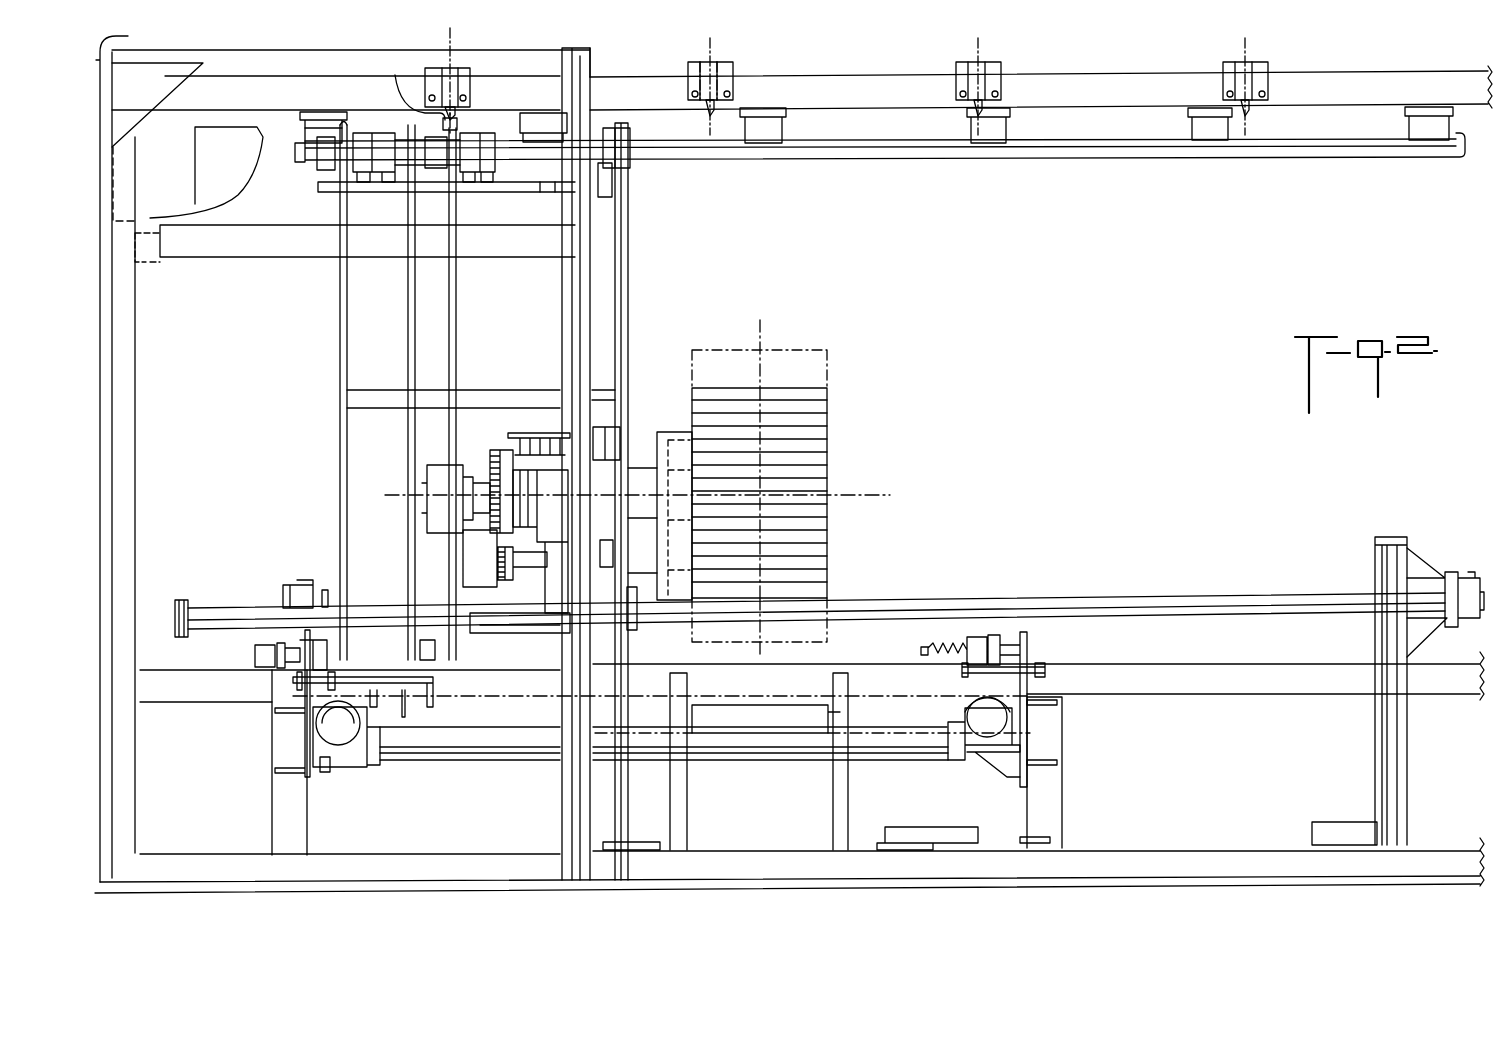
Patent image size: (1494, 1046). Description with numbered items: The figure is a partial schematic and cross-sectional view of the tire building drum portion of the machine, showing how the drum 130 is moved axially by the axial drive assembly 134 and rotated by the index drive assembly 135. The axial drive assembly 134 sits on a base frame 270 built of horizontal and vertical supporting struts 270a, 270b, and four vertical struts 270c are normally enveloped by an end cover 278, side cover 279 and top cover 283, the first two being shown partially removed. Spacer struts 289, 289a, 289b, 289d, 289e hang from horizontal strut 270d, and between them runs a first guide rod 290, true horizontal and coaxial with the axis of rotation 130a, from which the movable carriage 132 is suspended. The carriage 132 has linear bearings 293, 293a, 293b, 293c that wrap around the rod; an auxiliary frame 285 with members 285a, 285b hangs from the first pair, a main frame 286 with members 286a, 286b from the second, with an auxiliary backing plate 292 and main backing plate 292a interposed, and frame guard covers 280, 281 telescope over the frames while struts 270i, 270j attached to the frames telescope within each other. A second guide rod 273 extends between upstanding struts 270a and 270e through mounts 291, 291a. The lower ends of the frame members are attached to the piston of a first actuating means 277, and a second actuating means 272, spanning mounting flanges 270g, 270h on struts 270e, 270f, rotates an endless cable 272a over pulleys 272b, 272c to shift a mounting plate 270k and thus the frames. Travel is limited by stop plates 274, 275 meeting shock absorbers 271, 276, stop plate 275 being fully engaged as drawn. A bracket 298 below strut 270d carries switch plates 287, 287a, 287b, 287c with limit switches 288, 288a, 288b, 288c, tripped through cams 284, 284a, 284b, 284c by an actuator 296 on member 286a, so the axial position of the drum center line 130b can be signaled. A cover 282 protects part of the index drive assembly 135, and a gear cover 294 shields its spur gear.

The drum 130 is at (848, 438).
The axis of rotation 130a is at (870, 495).
The center line 130b is at (760, 342).
The horizontally movable carriage 132 is at (632, 337).
The axial drive assembly 134 is at (777, 774).
The index drive assembly 135 is at (486, 445).
The base frame 270 is at (1208, 857).
The supporting strut 270a is at (1378, 740).
The supporting strut 270b is at (168, 693).
The vertical supporting struts 270c is at (134, 773).
The horizontal supporting strut 270d is at (250, 62).
The upstanding strut 270e is at (280, 802).
The upstanding strut 270f is at (1052, 802).
The mounting flange 270g is at (1058, 737).
The mounting flange 270h is at (305, 740).
The supporting strut 270i is at (198, 250).
The supporting strut 270j is at (144, 262).
The mounting plate 270k is at (406, 690).
The shock absorber 271 is at (973, 643).
The second actuating means 272 is at (880, 755).
The endless cable 272a is at (618, 700).
The pulley 272b is at (975, 717).
The pulley 272c is at (343, 745).
The second guide rod 273 is at (1207, 600).
The stop plate 274 is at (428, 655).
The stop plate 275 is at (327, 588).
The shock absorber 276 is at (255, 648).
The first actuating means 277 is at (212, 600).
The end cover 278 is at (128, 36).
The side cover 279 is at (175, 72).
The frame guard cover 280 is at (212, 162).
The frame guard cover 281 is at (160, 145).
The protective cover 282 is at (513, 388).
The top cover 283 is at (322, 52).
The limit switch cam 284 is at (395, 75).
The limit switch cam 284a is at (710, 110).
The limit switch cam 284b is at (963, 110).
The limit switch cam 284c is at (1252, 108).
The auxiliary frame 285 is at (319, 319).
The frame member 285a is at (338, 348).
The frame member 285b is at (413, 358).
The main frame 286 is at (630, 269).
The frame member 286a is at (460, 313).
The frame member 286b is at (623, 293).
The switch plate 287 is at (470, 84).
The switch plate 287a is at (733, 72).
The switch plate 287b is at (960, 67).
The switch plate 287c is at (1006, 121).
The limit switch 288 is at (438, 68).
The limit switch 288a is at (717, 63).
The limit switch 288b is at (992, 70).
The limit switch 288c is at (1252, 70).
The spacer strut 289 is at (310, 127).
The spacer strut 289a is at (533, 142).
The spacer strut 289b is at (760, 143).
The spacer strut 289d is at (1203, 123).
The spacer strut 289e is at (1425, 140).
The first guide rod 290 is at (313, 163).
The mount 291 is at (288, 585).
The mount 291a is at (1425, 572).
The auxiliary backing plate 292 is at (320, 192).
The main backing plate 292a is at (557, 192).
The linear bearing 293 is at (350, 133).
The linear bearing 293a is at (397, 173).
The linear bearing 293b is at (467, 177).
The linear bearing 293c is at (612, 182).
The gear cover 294 is at (672, 428).
The actuator 296 is at (458, 126).
The bracket 298 is at (1375, 80).